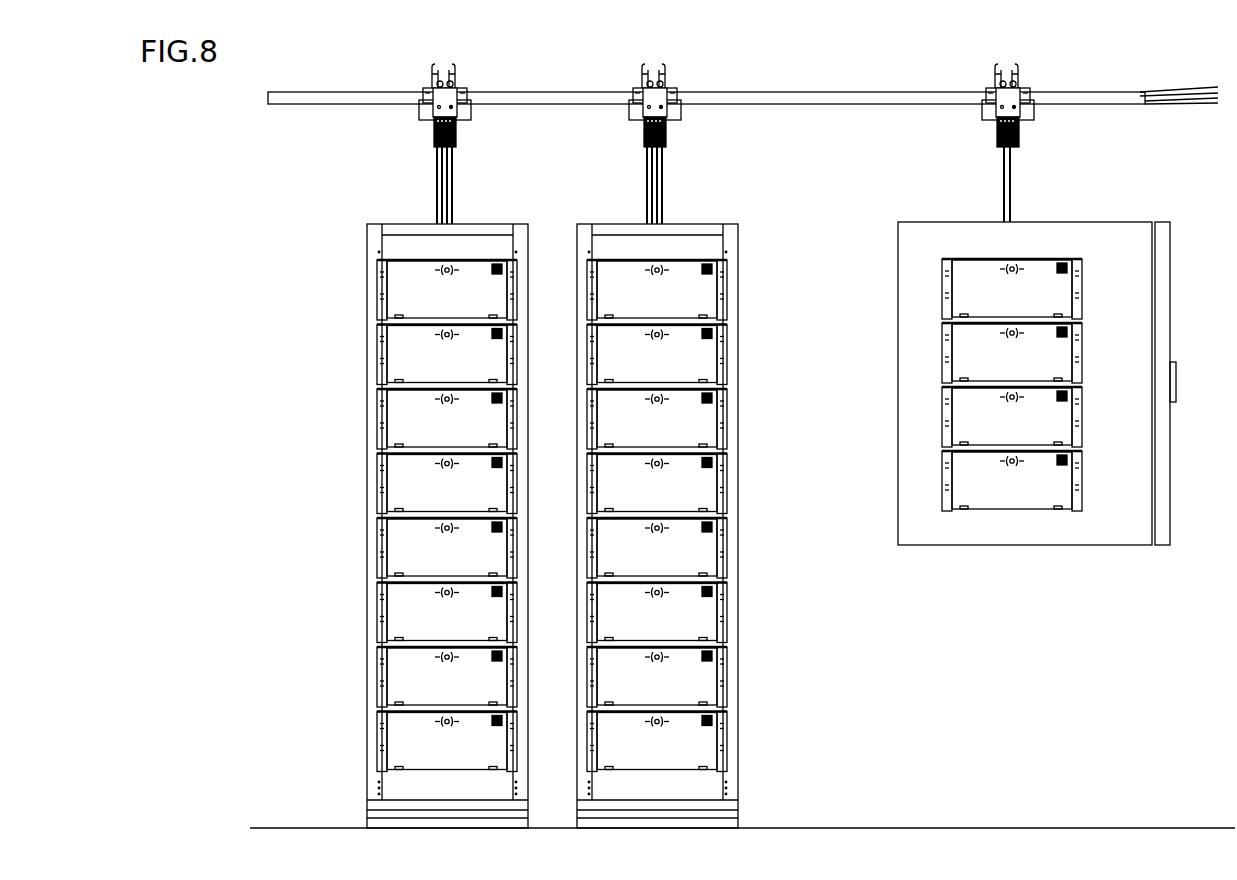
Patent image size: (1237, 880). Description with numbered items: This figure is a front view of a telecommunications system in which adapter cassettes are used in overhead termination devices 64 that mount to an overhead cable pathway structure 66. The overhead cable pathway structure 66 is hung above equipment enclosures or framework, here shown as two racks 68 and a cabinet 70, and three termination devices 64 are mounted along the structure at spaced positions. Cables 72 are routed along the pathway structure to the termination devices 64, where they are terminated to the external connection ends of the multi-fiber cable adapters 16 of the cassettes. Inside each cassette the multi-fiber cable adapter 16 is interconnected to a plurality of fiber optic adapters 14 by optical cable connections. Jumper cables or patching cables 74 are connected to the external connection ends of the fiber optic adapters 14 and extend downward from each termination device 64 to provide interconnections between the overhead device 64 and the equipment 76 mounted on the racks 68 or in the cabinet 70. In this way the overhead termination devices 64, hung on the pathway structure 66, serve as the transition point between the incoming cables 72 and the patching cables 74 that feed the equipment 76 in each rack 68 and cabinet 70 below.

The fiber optic adapters 14 is at (466, 138).
The multi-fiber cable adapter 16 is at (647, 84).
The termination device 64 is at (412, 127).
The overhead cable pathway structure 66 is at (512, 91).
The rack 68 is at (366, 408).
The cabinet 70 is at (988, 545).
The cables 72 is at (1000, 84).
The jumper cables or patching cables 74 is at (440, 190).
The equipment 76 is at (405, 545).